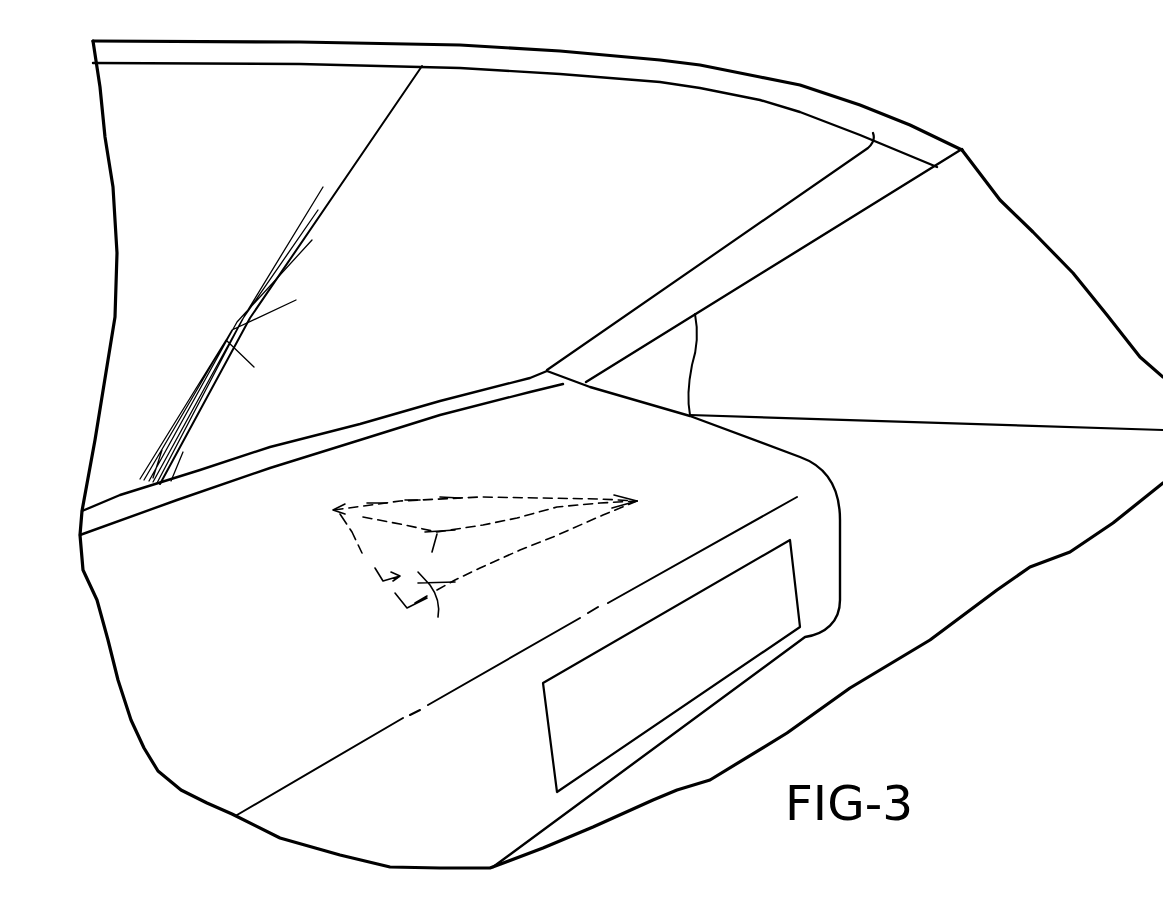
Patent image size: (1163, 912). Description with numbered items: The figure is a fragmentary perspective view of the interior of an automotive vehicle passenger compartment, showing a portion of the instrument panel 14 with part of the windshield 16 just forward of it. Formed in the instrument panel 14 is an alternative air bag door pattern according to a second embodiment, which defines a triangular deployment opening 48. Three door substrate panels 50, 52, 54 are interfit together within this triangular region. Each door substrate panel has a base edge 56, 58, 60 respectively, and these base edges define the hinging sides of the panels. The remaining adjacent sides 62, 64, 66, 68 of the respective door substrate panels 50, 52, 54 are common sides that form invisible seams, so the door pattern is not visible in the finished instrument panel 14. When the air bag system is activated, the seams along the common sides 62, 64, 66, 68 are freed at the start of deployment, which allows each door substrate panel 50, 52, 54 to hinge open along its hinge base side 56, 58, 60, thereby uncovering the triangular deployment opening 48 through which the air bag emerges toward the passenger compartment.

The instrument panel 14 is at (733, 513).
The windshield 16 is at (495, 250).
The triangular deployment opening 48 is at (345, 542).
The door substrate panel 50 is at (423, 511).
The door substrate panel 52 is at (476, 555).
The door substrate panel 54 is at (383, 581).
The base edge 56 is at (495, 485).
The base edge 58 is at (533, 553).
The base edge 60 is at (352, 558).
The adjacent side 62 is at (468, 530).
The adjacent side 64 is at (554, 502).
The adjacent side 66 is at (440, 622).
The adjacent side 68 is at (367, 508).